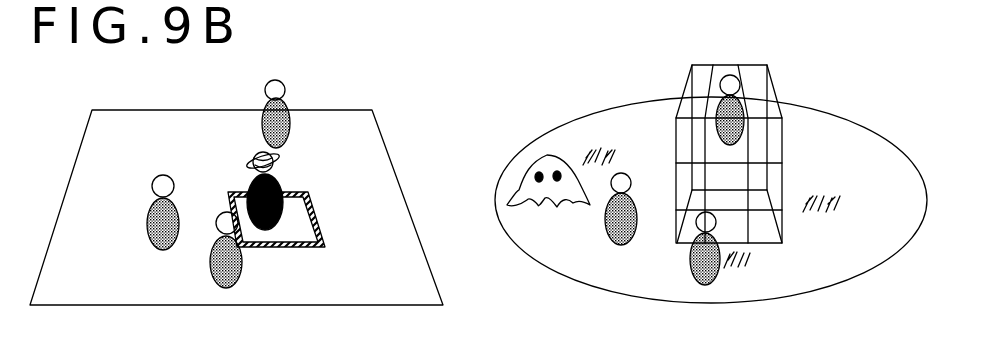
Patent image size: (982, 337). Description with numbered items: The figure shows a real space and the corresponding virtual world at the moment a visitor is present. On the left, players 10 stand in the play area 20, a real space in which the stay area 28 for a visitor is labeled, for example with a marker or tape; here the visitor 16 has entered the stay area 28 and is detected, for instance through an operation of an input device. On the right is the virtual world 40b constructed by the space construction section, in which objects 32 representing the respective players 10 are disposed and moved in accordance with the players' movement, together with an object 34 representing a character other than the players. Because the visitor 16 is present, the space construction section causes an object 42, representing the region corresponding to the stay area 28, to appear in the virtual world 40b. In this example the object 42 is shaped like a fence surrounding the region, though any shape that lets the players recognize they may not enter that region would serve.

The players 10 is at (222, 214).
The visitor 16 is at (280, 180).
The play area 20 is at (333, 109).
The stay area 28 is at (318, 211).
The objects 32 is at (697, 276).
The object 34 is at (528, 177).
The virtual world 40b is at (832, 108).
The object 42 is at (767, 64).